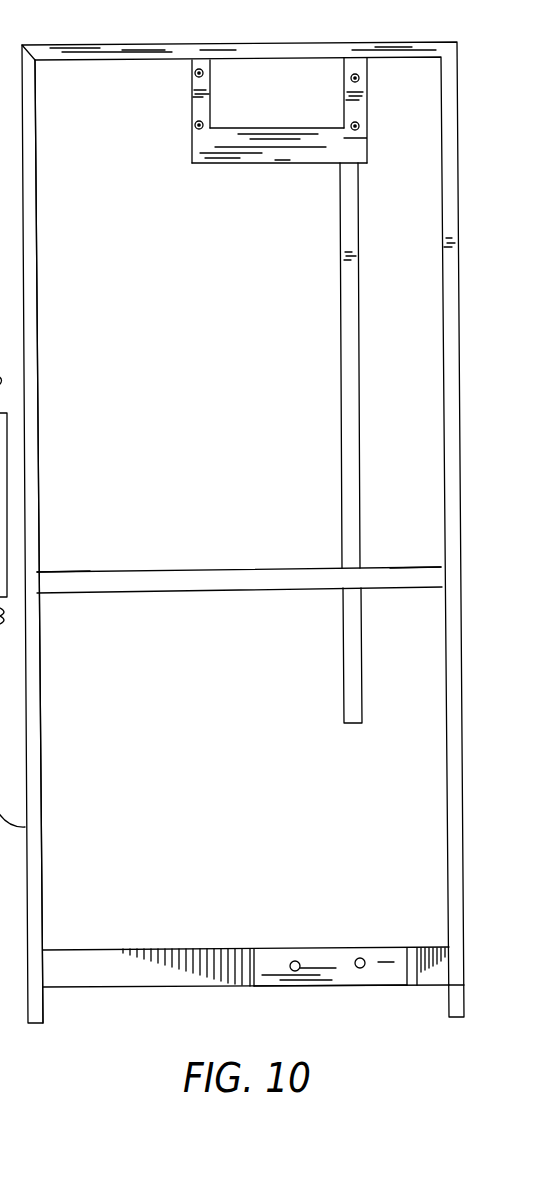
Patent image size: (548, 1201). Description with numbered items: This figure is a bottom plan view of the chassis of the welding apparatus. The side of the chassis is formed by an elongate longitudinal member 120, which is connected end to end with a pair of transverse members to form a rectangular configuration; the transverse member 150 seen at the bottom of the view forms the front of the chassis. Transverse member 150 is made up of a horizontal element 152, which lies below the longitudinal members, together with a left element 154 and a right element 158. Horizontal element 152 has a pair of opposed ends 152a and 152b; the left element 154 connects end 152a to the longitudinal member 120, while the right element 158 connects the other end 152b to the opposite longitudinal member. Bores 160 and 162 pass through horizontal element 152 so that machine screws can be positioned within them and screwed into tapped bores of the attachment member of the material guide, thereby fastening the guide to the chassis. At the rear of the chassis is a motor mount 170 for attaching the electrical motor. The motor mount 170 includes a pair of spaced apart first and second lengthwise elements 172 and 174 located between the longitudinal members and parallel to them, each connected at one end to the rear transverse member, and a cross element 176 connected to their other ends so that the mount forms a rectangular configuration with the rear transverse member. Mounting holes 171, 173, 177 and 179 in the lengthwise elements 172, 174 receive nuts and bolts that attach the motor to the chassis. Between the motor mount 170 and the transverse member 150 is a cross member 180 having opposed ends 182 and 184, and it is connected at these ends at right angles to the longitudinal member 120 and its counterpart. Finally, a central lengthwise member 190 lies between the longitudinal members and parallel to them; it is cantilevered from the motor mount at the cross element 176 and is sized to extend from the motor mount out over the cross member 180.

The longitudinal member 120 is at (458, 526).
The transverse member 150 is at (253, 983).
The horizontal element 152 is at (330, 967).
The end of horizontal element 152a is at (407, 988).
The end of horizontal element 152b is at (253, 988).
The left element 154 is at (437, 987).
The right element 158 is at (128, 988).
The bore 160 is at (360, 957).
The bore 162 is at (296, 960).
The motor mount 170 is at (271, 149).
The mounting hole 171 is at (201, 68).
The first lengthwise element 172 is at (192, 104).
The mounting hole 173 is at (196, 130).
The second lengthwise element 174 is at (368, 102).
The cross element 176 is at (226, 168).
The mounting hole 177 is at (359, 126).
The mounting hole 179 is at (359, 78).
The cross member 180 is at (176, 568).
The end of cross member 182 is at (440, 566).
The end of cross member 184 is at (42, 570).
The central lengthwise member 190 is at (344, 394).